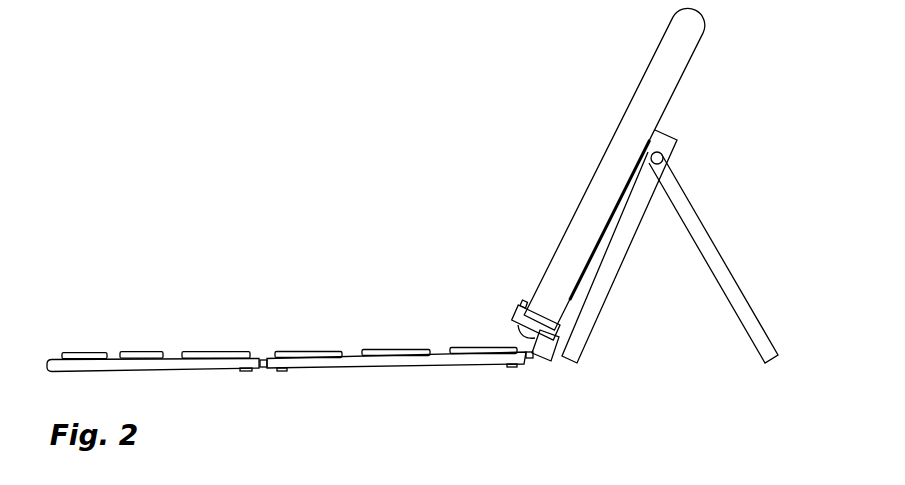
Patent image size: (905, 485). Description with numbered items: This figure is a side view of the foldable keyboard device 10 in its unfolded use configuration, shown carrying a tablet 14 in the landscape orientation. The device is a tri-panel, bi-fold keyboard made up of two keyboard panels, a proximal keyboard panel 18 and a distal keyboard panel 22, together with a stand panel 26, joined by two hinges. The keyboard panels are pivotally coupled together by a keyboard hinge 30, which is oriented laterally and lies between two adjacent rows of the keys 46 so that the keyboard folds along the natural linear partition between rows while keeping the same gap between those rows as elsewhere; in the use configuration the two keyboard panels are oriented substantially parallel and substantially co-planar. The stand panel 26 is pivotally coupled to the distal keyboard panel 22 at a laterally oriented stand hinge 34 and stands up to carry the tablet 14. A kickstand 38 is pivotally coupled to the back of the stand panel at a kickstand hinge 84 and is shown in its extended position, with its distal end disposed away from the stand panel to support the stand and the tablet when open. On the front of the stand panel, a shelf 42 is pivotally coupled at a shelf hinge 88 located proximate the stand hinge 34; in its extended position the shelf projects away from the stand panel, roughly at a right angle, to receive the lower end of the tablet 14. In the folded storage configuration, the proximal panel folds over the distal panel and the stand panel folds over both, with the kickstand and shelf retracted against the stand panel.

The foldable keyboard device 10 is at (252, 312).
The tablet 14 is at (620, 93).
The proximal keyboard panel 18 is at (147, 370).
The distal keyboard panel 22 is at (390, 365).
The stand panel 26 is at (607, 273).
The keyboard hinge 30 is at (260, 370).
The stand hinge 34 is at (530, 367).
The kickstand 38 is at (727, 275).
The shelf 42 is at (515, 315).
The keys 46 is at (127, 352).
The kickstand hinge 84 is at (662, 163).
The shelf hinge 88 is at (567, 355).